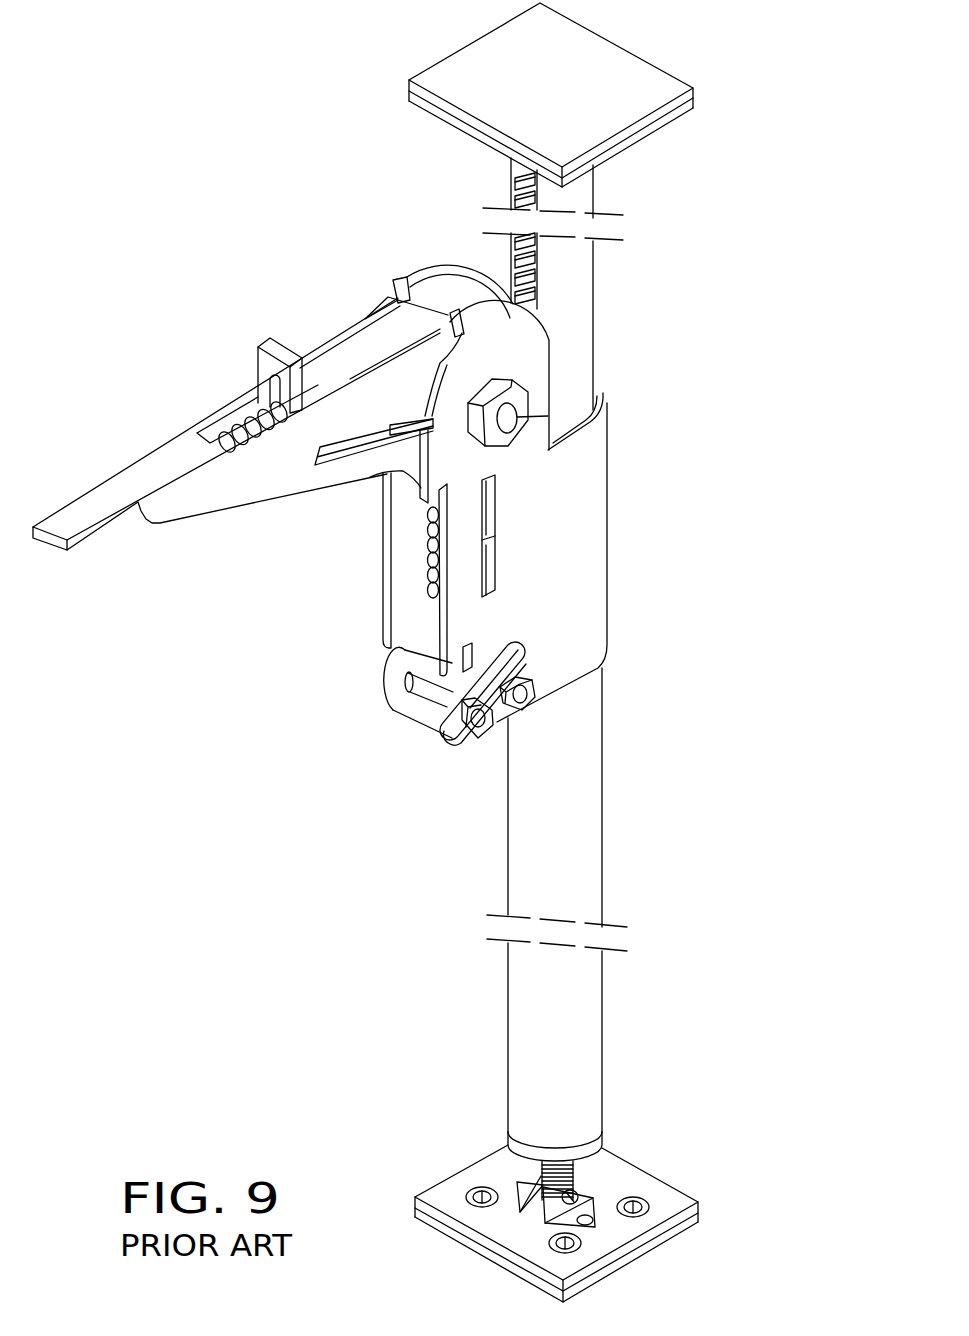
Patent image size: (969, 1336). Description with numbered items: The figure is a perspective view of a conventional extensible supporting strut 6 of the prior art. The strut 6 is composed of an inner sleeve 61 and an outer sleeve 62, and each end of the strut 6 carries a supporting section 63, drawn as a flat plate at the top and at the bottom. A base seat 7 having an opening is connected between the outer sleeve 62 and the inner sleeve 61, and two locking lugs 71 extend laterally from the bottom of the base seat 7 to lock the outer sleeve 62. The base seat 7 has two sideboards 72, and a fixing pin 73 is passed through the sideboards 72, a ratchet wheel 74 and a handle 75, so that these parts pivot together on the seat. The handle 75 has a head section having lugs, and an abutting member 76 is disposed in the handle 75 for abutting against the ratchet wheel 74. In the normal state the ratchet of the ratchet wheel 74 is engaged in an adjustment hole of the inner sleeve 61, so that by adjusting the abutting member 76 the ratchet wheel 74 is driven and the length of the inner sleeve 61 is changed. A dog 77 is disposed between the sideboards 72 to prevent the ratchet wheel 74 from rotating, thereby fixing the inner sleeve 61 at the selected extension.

The extensible supporting strut 6 is at (694, 216).
The base seat 7 is at (365, 514).
The inner sleeve 61 is at (573, 324).
The outer sleeve 62 is at (550, 838).
The supporting section 63 is at (637, 110).
The locking lugs 71 is at (500, 717).
The sideboards 72 is at (462, 625).
The fixing pin 73 is at (603, 394).
The ratchet wheel 74 is at (432, 333).
The handle 75 is at (194, 512).
The abutting member 76 is at (302, 375).
The dog 77 is at (420, 608).